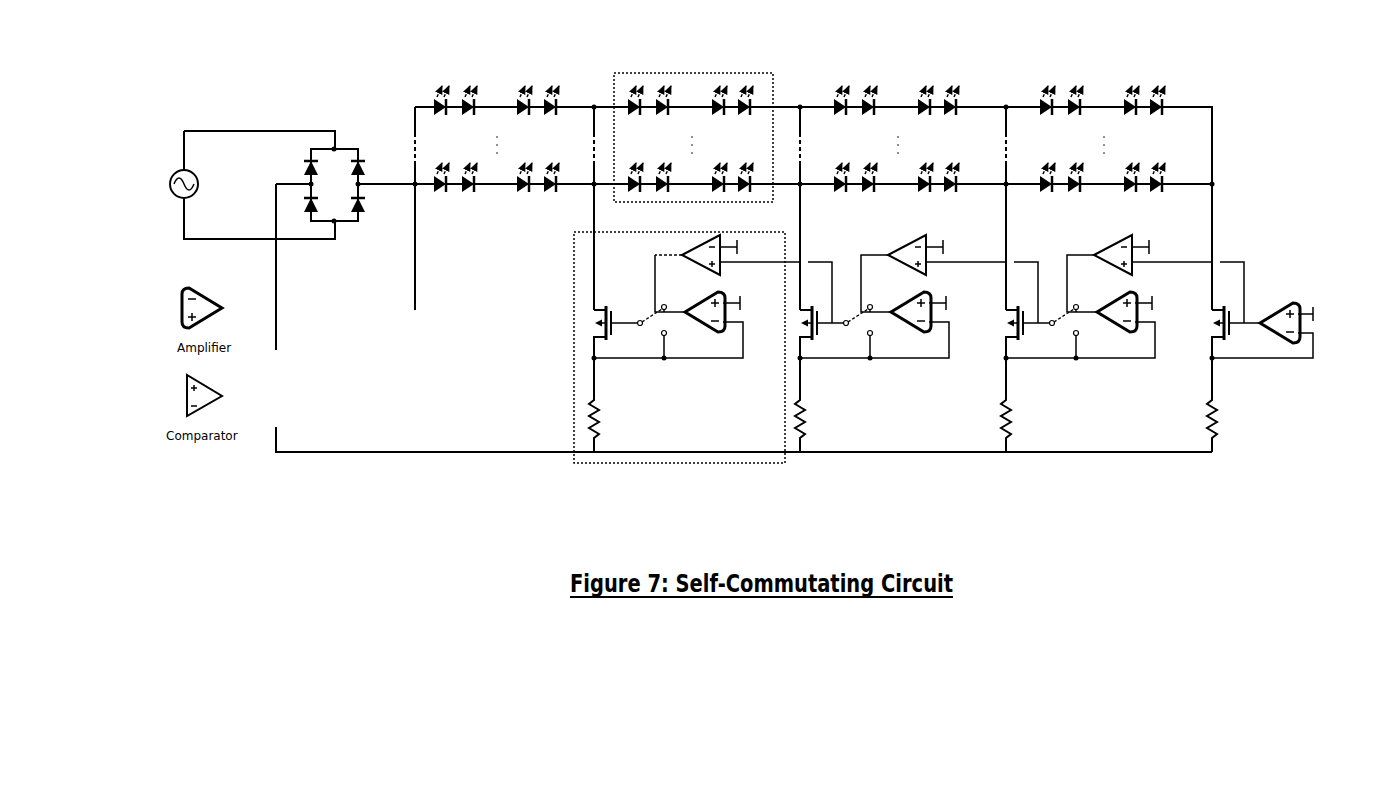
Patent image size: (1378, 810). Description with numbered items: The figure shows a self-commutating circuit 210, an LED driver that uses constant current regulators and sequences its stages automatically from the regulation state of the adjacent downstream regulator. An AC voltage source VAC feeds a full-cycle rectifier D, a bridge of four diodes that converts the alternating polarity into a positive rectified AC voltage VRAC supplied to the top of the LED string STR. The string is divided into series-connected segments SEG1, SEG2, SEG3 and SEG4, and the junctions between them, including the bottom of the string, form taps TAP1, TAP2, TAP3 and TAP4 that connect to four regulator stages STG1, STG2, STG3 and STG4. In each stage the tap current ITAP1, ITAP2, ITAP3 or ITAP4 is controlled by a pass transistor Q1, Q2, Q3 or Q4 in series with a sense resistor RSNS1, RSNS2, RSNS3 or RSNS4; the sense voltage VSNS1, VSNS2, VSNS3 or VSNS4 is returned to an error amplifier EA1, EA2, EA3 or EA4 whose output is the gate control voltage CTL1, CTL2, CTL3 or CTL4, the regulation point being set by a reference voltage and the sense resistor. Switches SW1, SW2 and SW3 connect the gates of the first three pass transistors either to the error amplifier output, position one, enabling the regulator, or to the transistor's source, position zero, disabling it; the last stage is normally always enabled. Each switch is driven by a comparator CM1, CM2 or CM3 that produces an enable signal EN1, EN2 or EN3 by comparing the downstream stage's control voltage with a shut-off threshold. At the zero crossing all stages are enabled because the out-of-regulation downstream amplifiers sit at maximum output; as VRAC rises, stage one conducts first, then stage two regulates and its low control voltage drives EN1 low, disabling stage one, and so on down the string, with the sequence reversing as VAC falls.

The self-commutating circuit 210 is at (450, 343).
The LED string STR is at (421, 75).
The first LED string segment SEG1 is at (513, 67).
The second LED string segment SEG2 is at (719, 67).
The third LED string segment SEG3 is at (925, 67).
The fourth LED string segment SEG4 is at (1131, 67).
The first tap TAP1 is at (590, 187).
The second tap TAP2 is at (796, 187).
The third tap TAP3 is at (1002, 187).
The fourth tap TAP4 is at (1208, 187).
The full-cycle rectifier D is at (367, 221).
The rectified AC voltage VRAC is at (397, 181).
The AC voltage source VAC is at (252, 185).
The first pass transistor Q1 is at (617, 332).
The second pass transistor Q2 is at (823, 332).
The third pass transistor Q3 is at (1029, 332).
The fourth pass transistor Q4 is at (1236, 332).
The first switch SW1 is at (652, 326).
The second switch SW2 is at (858, 326).
The third switch SW3 is at (1064, 326).
The first error amplifier EA1 is at (682, 325).
The second error amplifier EA2 is at (888, 325).
The third error amplifier EA3 is at (1094, 325).
The fourth error amplifier EA4 is at (1278, 330).
The first comparator CM1 is at (741, 261).
The second comparator CM2 is at (947, 261).
The third comparator CM3 is at (1153, 261).
The first enable signal EN1 is at (652, 274).
The second enable signal EN2 is at (868, 253).
The third enable signal EN3 is at (1074, 253).
The first gate control voltage CTL1 is at (628, 320).
The second gate control voltage CTL2 is at (826, 260).
The third gate control voltage CTL3 is at (1030, 260).
The fourth gate control voltage CTL4 is at (1247, 261).
The first tap current ITAP1 is at (602, 366).
The second tap current ITAP2 is at (808, 366).
The third tap current ITAP3 is at (1014, 366).
The fourth tap current ITAP4 is at (1220, 366).
The first sense resistor RSNS1 is at (616, 405).
The second sense resistor RSNS2 is at (822, 405).
The third sense resistor RSNS3 is at (1028, 405).
The fourth sense resistor RSNS4 is at (1234, 405).
The first sense voltage VSNS1 is at (715, 361).
The second sense voltage VSNS2 is at (921, 361).
The third sense voltage VSNS3 is at (1127, 361).
The fourth sense voltage VSNS4 is at (1302, 361).
The first stage STG1 is at (700, 467).
The second stage STG2 is at (915, 464).
The third stage STG3 is at (1141, 464).
The last stage STG4 is at (1282, 380).